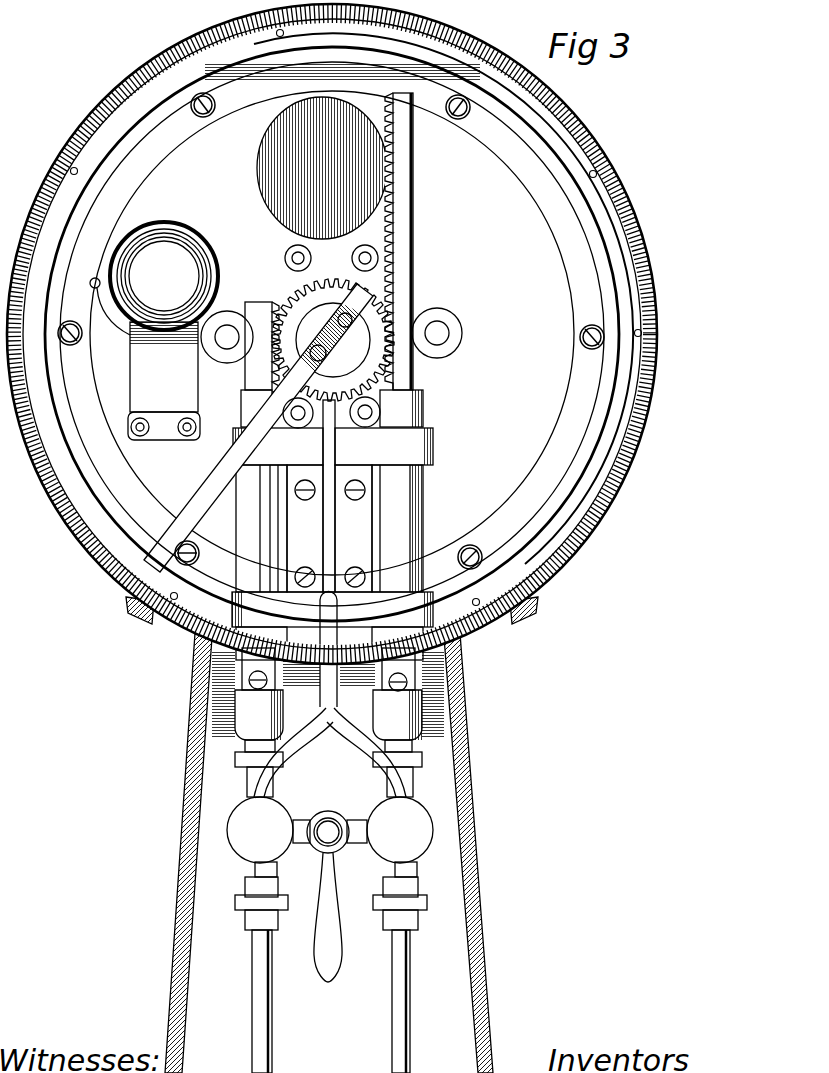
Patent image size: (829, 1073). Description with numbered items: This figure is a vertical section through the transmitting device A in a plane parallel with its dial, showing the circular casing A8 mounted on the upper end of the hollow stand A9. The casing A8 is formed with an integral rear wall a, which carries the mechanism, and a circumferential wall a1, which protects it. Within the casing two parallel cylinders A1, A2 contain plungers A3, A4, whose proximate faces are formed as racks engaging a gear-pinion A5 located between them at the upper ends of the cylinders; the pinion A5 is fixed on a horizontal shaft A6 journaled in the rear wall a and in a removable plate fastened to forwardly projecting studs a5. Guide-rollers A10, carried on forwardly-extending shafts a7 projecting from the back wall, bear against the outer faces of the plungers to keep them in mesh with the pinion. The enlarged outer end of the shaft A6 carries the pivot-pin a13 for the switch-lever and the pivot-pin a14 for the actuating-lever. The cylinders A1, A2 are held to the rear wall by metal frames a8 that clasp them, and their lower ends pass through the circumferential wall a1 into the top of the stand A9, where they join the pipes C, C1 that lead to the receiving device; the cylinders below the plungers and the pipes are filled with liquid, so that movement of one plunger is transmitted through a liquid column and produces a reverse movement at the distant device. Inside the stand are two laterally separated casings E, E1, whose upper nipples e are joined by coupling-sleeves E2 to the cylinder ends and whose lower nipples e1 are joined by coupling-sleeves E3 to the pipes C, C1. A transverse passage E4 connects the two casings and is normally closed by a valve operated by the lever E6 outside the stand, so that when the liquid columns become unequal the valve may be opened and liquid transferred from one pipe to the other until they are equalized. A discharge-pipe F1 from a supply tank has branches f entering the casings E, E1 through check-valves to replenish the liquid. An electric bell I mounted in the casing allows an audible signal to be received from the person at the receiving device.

The casing A is at (330, 327).
The cylinder A1 is at (415, 520).
The cylinder A2 is at (255, 508).
The plunger A3 is at (332, 318).
The plunger A4 is at (255, 310).
The gear-pinion A5 is at (319, 293).
The horizontal shaft A6 is at (313, 326).
The circular casing A8 is at (595, 148).
The hollow stand A9 is at (487, 995).
The guide-rollers A10 is at (465, 348).
The rear wall a is at (525, 146).
The circumferential wall a1 is at (656, 356).
The studs a5 is at (286, 262).
The forwardly-extending shafts a7 is at (452, 325).
The metal frames a8 is at (467, 412).
The pivot-pin a13 is at (330, 336).
The pivot-pin a14 is at (318, 410).
The electric bell I is at (180, 230).
The discharge-pipe F1 is at (341, 553).
The branches f is at (293, 762).
The casing E is at (400, 830).
The casing E1 is at (260, 830).
The coupling-sleeves E2 is at (236, 758).
The coupling-sleeves E3 is at (240, 905).
The transverse pipe or passage E4 is at (368, 822).
The operating-lever E6 is at (325, 950).
The upper nipples e is at (245, 796).
The lower nipples e1 is at (255, 870).
The pipe C is at (418, 1001).
The pipe C1 is at (268, 1030).